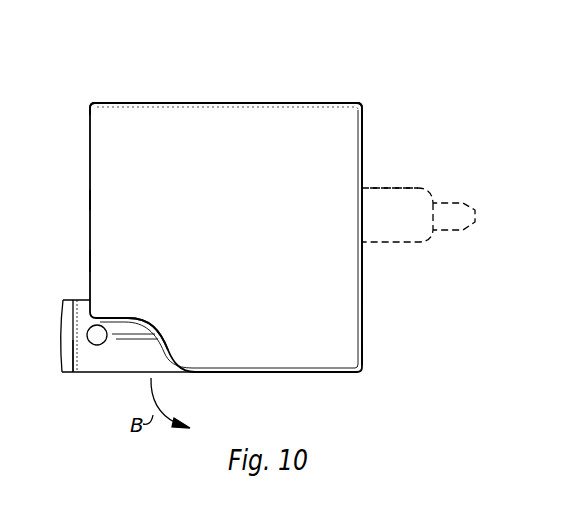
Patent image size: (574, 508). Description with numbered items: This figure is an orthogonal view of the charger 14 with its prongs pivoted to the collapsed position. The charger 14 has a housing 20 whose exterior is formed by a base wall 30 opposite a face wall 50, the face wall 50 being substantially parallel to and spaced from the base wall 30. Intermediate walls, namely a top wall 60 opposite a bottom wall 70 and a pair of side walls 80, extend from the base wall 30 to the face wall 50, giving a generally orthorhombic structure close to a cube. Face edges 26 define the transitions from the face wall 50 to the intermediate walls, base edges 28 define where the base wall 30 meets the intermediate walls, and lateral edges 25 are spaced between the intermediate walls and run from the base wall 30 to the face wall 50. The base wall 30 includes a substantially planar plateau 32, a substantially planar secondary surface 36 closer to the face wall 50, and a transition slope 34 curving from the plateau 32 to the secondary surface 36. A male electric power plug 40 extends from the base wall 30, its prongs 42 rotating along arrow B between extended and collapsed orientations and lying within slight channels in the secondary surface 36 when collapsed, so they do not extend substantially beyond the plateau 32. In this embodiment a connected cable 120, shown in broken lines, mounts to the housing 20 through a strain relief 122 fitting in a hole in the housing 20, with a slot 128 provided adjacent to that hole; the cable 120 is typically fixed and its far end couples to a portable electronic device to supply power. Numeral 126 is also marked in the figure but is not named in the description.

The charger 14 is at (344, 76).
The face wall 50 is at (197, 103).
The face edges 26 is at (91, 102).
The housing 20 is at (372, 134).
The connected cable 120 is at (448, 252).
The strain relief 122 is at (392, 194).
The top wall 60 is at (362, 292).
The lateral edges 25 is at (363, 357).
The bottom wall 70 is at (90, 261).
The side walls 80 is at (229, 232).
The base wall 30 is at (298, 374).
The plateau 32 is at (219, 375).
The male electric power plug 40 is at (62, 393).
The prongs 42 is at (72, 353).
The secondary surface 36 is at (121, 322).
The transition slope 34 is at (165, 349).
The element 126 is at (13, 145).
The slot 128 is at (0, 198).
The base edges 28 is at (13, 262).